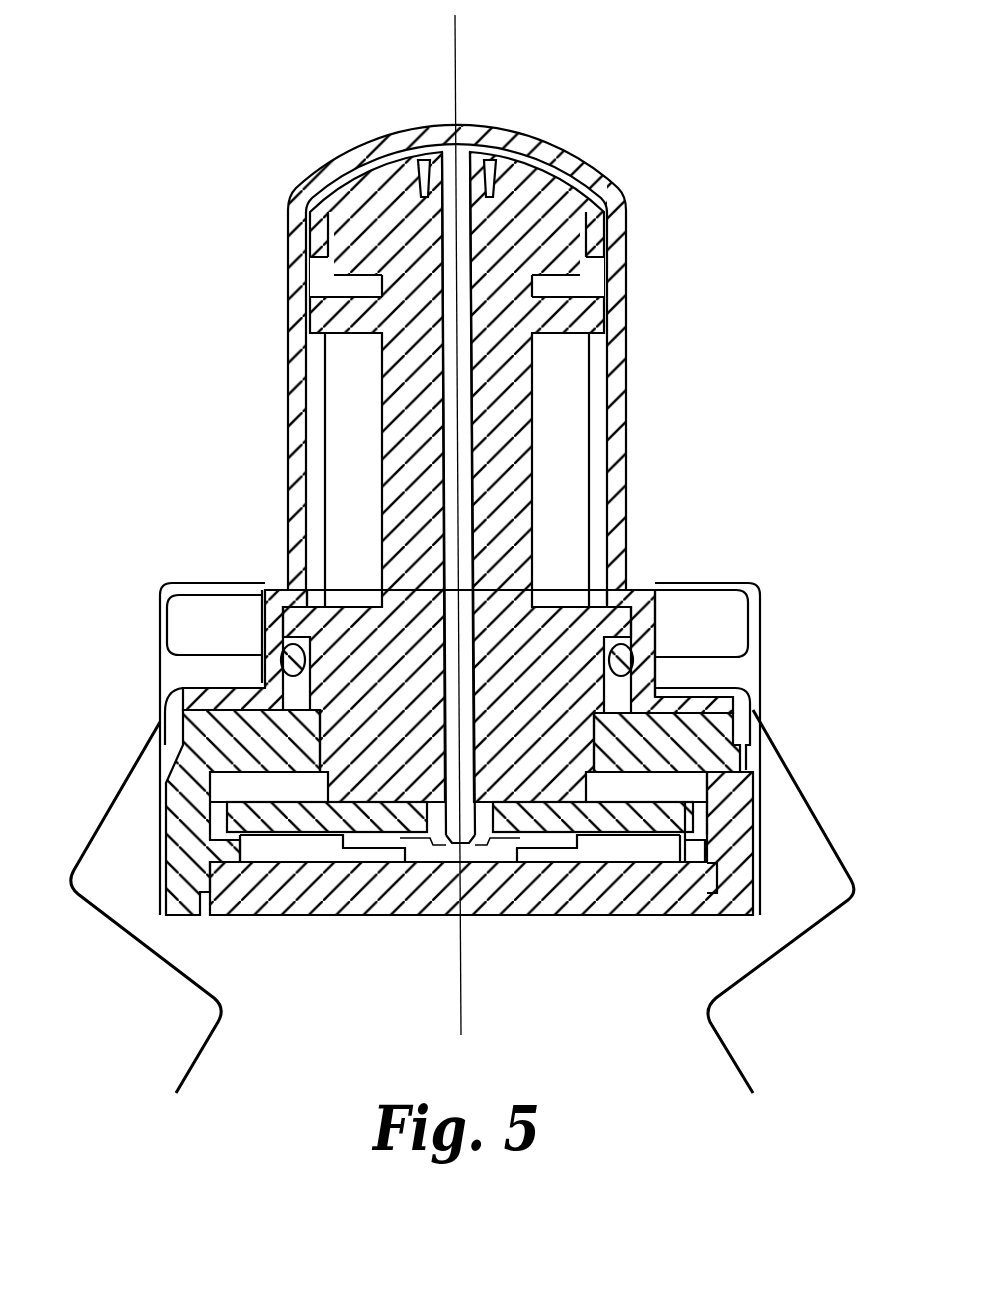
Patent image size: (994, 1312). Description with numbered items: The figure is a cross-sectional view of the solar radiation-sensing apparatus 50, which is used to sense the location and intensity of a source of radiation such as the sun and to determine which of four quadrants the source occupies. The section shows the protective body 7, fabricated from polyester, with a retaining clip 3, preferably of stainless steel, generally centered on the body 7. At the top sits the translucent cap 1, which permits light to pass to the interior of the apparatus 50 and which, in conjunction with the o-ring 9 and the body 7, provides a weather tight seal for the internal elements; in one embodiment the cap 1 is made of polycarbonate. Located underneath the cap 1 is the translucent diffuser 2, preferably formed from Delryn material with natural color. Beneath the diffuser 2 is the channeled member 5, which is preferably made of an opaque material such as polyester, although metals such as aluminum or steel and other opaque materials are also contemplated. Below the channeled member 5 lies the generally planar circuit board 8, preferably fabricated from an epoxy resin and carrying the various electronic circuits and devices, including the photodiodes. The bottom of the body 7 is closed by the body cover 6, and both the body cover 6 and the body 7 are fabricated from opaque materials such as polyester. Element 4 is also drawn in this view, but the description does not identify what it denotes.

The translucent cap 1 is at (552, 145).
The translucent diffuser 2 is at (338, 188).
The retaining clip 3 is at (83, 853).
The valve body 4 is at (647, 800).
The channeled member 5 is at (537, 488).
The body cover 6 is at (623, 917).
The protective body 7 is at (747, 587).
The circuit board 8 is at (712, 776).
The o-ring 9 is at (283, 655).
The solar radiation-sensing apparatus 50 is at (250, 315).